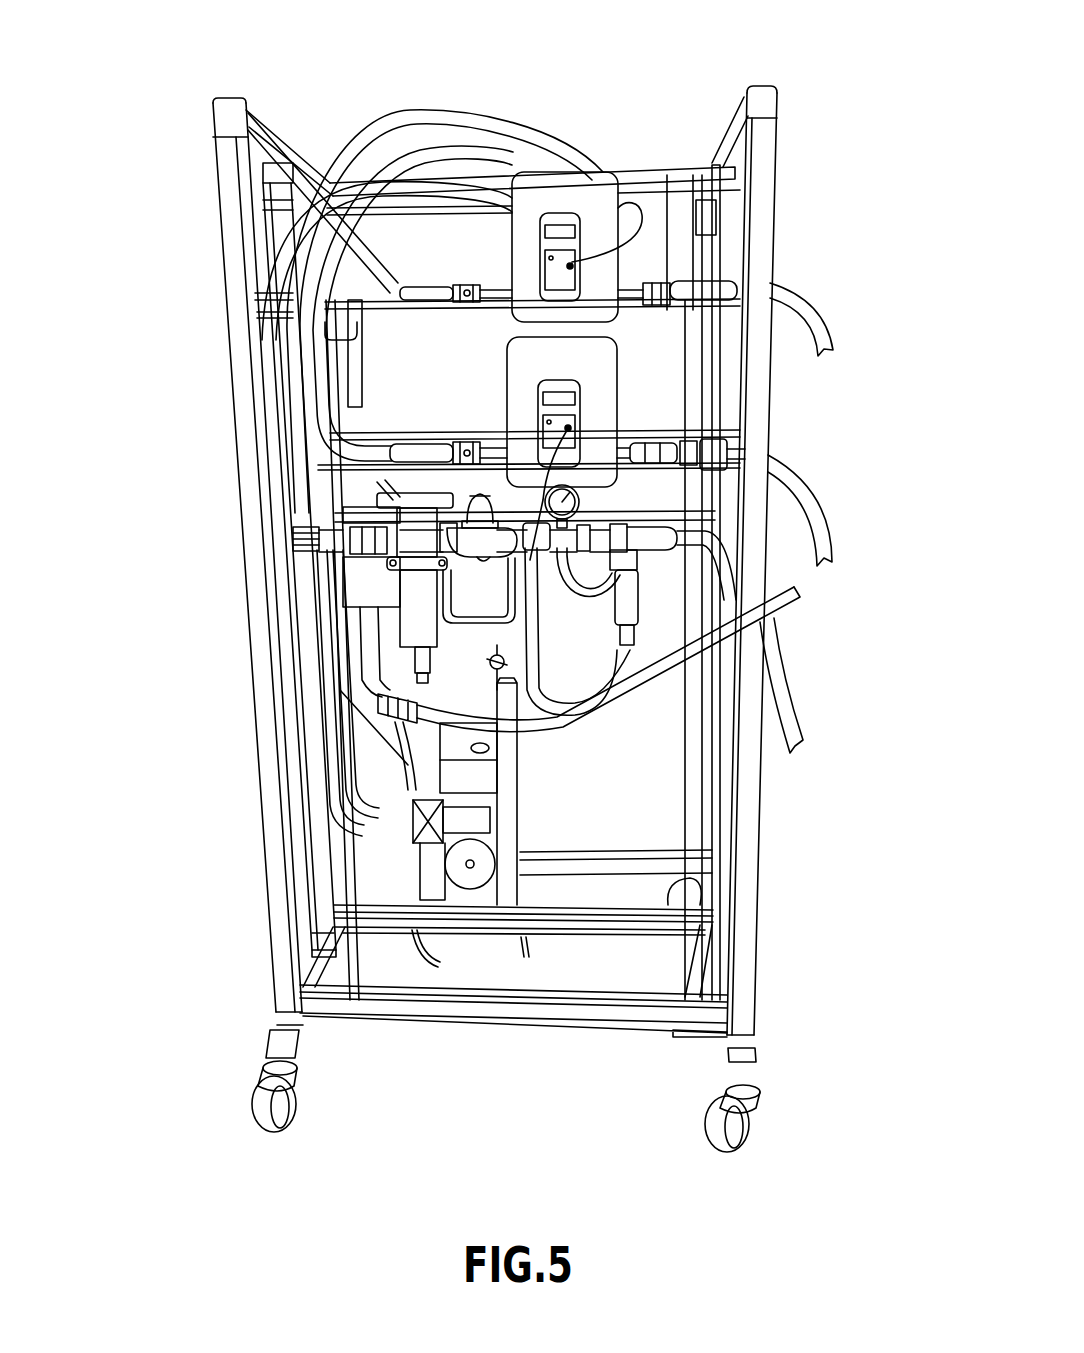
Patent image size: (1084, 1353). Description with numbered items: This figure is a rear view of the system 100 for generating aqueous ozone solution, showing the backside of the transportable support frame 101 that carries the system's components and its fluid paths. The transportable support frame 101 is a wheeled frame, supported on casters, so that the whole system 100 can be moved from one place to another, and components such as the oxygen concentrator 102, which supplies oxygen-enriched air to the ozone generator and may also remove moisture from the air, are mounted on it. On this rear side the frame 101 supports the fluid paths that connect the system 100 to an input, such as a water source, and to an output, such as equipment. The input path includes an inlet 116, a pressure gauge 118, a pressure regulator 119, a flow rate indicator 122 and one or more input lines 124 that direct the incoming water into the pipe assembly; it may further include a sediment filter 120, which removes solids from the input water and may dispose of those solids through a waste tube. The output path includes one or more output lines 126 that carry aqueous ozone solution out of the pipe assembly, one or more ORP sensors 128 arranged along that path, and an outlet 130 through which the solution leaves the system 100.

The system 100 is at (206, 64).
The transportable support frame 101 is at (766, 177).
The oxygen concentrator 102 is at (510, 784).
The inlet 116 is at (785, 716).
The pressure gauge 118 is at (582, 496).
The pressure regulator 119 is at (482, 500).
The sediment filter 120 is at (413, 617).
The flow rate indicator 122 is at (298, 436).
The input lines 124 is at (367, 197).
The output lines 126 is at (420, 117).
The ORP sensors 128 is at (562, 220).
The outlet 130 is at (802, 312).